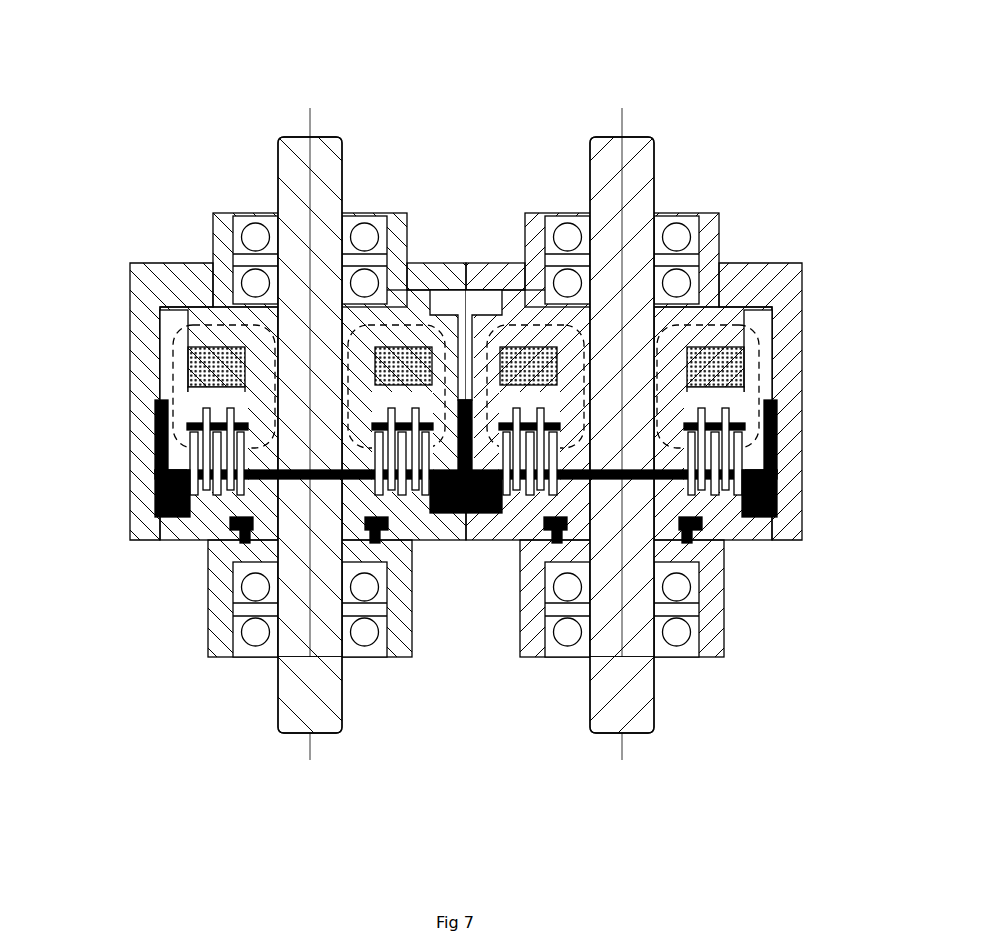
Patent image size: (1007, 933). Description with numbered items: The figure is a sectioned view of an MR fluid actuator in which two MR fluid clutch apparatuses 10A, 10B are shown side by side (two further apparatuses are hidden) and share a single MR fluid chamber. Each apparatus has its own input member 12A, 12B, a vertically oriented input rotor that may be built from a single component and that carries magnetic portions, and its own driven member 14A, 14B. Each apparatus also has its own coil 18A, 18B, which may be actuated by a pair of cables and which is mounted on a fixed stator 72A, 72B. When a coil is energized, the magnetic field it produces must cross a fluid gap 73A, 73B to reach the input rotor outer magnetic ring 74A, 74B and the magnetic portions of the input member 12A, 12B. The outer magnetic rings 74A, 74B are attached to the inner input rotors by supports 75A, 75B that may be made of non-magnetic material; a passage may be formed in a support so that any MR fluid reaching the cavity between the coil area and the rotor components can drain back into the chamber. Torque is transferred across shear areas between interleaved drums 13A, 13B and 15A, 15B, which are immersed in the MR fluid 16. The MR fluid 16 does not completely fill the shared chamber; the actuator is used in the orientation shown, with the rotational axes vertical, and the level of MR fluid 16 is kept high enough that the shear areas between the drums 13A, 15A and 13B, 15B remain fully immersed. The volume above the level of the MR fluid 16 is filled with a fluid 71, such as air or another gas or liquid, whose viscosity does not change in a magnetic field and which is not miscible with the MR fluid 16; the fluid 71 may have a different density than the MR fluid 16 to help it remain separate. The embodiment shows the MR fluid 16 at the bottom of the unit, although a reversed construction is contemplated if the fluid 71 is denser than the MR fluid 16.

The MR fluid clutch apparatus 10A is at (145, 225).
The MR fluid clutch apparatus 10B is at (775, 228).
The input member 12A is at (290, 140).
The input member 12B is at (605, 130).
The drum 13A is at (230, 422).
The drum 13B is at (700, 428).
The driven member 14A is at (280, 712).
The driven member 14B is at (605, 730).
The drum 15A is at (230, 477).
The drum 15B is at (740, 460).
The MR fluid 16 is at (510, 482).
The coil 18A is at (158, 375).
The coil 18B is at (737, 355).
The fluid 71 is at (235, 390).
The fixed stator 72A is at (212, 294).
The fixed stator 72B is at (712, 272).
The fluid gap 73A is at (232, 332).
The fluid gap 73B is at (688, 327).
The input rotor outer magnetic ring 74A is at (182, 397).
The input rotor outer magnetic ring 74B is at (763, 373).
The support 75A is at (180, 415).
The support 75B is at (732, 398).